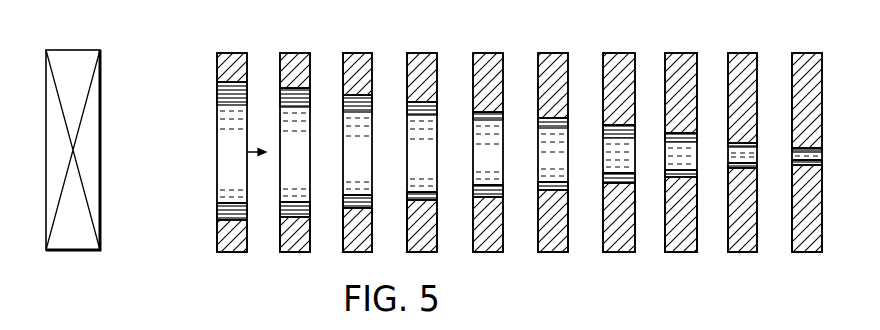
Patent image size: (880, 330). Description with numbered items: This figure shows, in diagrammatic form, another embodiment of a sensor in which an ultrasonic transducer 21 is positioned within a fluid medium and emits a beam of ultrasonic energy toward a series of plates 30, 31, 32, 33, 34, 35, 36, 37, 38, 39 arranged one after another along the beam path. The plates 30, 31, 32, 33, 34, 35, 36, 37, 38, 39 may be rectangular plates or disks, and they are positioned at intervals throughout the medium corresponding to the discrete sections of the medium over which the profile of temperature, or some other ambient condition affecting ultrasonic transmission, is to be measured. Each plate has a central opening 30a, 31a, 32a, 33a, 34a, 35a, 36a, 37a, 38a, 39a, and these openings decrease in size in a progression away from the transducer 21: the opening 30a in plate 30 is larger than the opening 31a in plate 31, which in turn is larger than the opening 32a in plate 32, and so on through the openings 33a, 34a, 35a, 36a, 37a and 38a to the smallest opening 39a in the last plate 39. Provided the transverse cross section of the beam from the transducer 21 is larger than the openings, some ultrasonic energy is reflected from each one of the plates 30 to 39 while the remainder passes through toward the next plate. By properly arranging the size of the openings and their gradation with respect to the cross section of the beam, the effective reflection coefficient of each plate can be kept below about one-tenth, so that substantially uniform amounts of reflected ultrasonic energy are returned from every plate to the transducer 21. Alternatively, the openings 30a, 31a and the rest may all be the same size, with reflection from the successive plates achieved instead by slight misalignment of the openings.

The ultrasonic transducer 21 is at (77, 50).
The plate 30 is at (228, 53).
The plate 31 is at (291, 53).
The plate 32 is at (354, 53).
The plate 33 is at (418, 53).
The plate 34 is at (484, 53).
The plate 35 is at (549, 53).
The plate 36 is at (614, 53).
The plate 37 is at (676, 53).
The plate 38 is at (739, 53).
The plate 39 is at (803, 53).
The central opening 30a is at (229, 196).
The central opening 31a is at (289, 187).
The central opening 32a is at (353, 182).
The central opening 33a is at (418, 172).
The central opening 34a is at (485, 167).
The central opening 35a is at (548, 165).
The central opening 36a is at (612, 163).
The central opening 37a is at (674, 160).
The central opening 38a is at (738, 155).
The central opening 39a is at (803, 156).